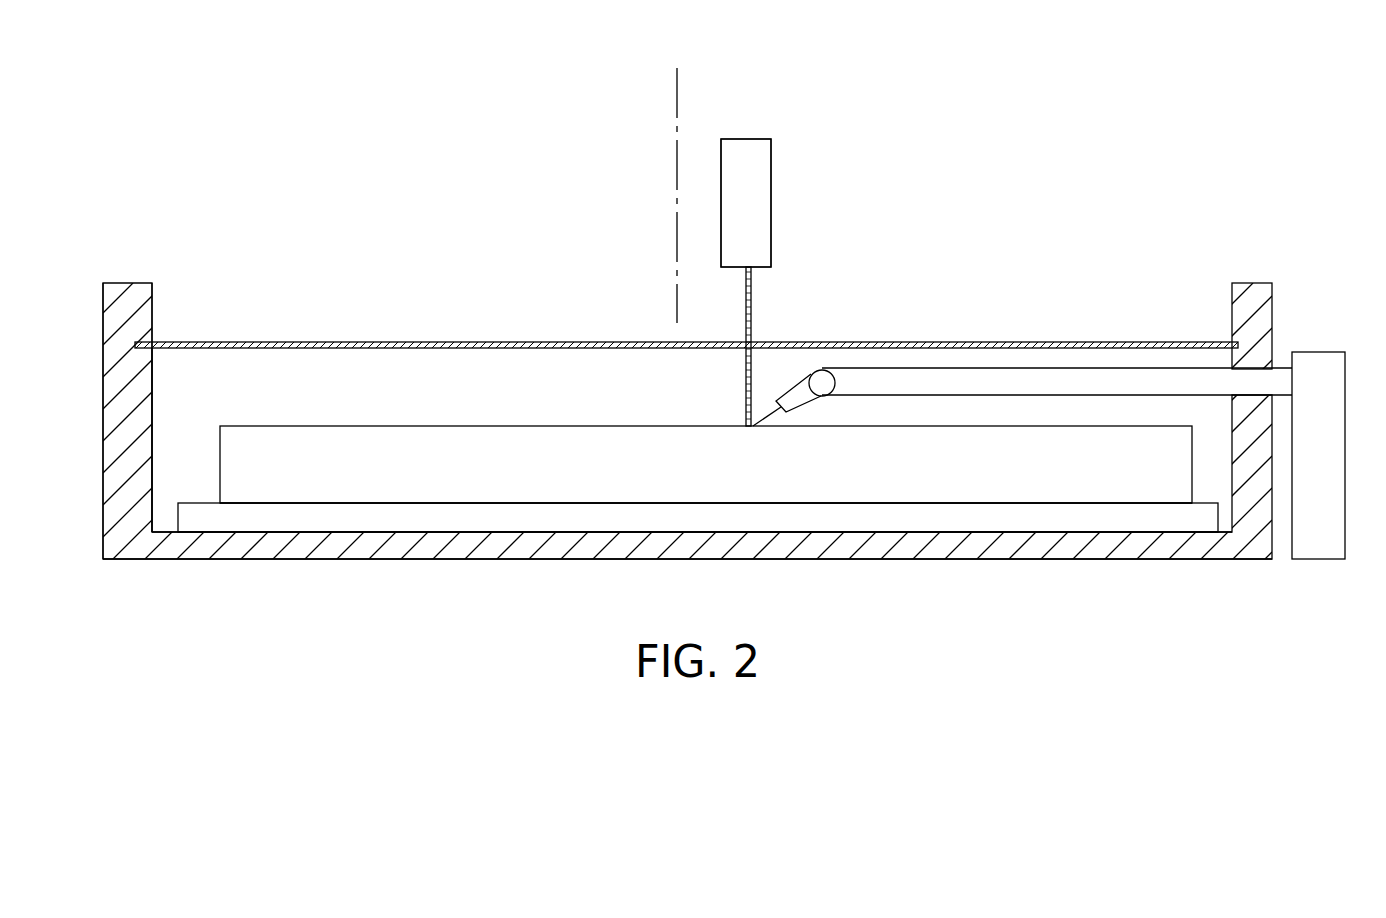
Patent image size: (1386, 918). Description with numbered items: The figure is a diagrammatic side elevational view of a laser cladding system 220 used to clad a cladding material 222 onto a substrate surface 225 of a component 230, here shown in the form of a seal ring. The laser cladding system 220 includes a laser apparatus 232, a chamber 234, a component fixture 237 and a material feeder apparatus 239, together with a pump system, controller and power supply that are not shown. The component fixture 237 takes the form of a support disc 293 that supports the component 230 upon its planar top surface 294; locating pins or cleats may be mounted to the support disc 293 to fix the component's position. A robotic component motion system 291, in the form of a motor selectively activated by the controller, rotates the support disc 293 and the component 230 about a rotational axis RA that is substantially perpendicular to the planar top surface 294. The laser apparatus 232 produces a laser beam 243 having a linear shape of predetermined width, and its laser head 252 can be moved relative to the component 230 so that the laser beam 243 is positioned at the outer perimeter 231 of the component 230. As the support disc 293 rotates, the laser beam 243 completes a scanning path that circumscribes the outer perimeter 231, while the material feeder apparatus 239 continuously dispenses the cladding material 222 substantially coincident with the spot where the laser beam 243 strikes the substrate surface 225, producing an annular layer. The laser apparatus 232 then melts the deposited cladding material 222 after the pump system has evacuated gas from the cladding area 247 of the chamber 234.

The laser cladding system 220 is at (238, 188).
The cladding material 222 is at (763, 415).
The substrate surface 225 is at (552, 421).
The component 230 is at (375, 445).
The outer perimeter 231 is at (219, 426).
The laser apparatus 232 is at (756, 200).
The chamber 234 is at (103, 380).
The component fixture 237 is at (310, 517).
The material feeder apparatus 239 is at (1325, 380).
The laser beam 243 is at (752, 297).
The cladding area 247 is at (384, 366).
The laser head 252 is at (757, 167).
The robotic component motion system 291 is at (735, 515).
The support disc 293 is at (377, 517).
The planar top surface 294 is at (438, 498).
The rotational axis RA is at (677, 148).